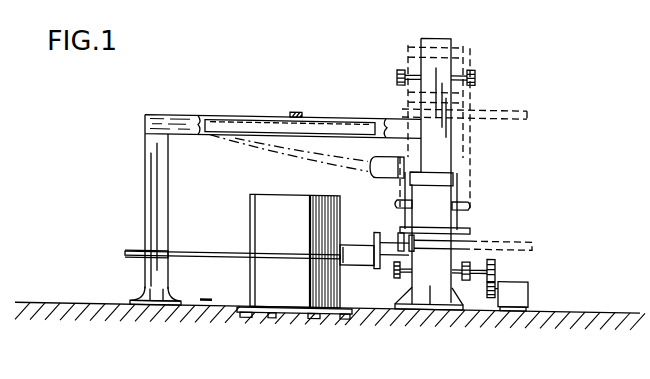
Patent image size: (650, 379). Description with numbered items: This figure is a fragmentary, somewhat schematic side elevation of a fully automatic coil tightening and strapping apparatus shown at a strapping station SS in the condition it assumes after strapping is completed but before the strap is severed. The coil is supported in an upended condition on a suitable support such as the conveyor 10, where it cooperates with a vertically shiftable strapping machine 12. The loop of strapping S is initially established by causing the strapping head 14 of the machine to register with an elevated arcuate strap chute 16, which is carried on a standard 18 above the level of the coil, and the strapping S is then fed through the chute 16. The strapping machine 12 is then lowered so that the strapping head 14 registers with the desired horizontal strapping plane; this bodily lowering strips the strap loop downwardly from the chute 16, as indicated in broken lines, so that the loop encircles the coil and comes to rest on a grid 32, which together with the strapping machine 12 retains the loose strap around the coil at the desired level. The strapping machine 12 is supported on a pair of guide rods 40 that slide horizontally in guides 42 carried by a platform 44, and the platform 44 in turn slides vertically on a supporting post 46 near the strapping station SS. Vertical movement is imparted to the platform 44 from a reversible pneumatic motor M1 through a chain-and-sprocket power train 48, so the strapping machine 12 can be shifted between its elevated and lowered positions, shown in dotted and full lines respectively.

The conveyor 10 is at (292, 308).
The strapping machine 12 is at (357, 234).
The strapping head 14 is at (343, 259).
The arcuate strap chute 16 is at (245, 112).
The standard 18 is at (168, 187).
The grid 32 is at (228, 248).
The guide rods 40 is at (500, 231).
The guides 42 is at (468, 242).
The platform 44 is at (433, 220).
The supporting post 46 is at (433, 132).
The power train 48 is at (472, 182).
The strapping S is at (290, 245).
The strapping station SS is at (207, 289).
The reversible pneumatic motor M1 is at (524, 283).